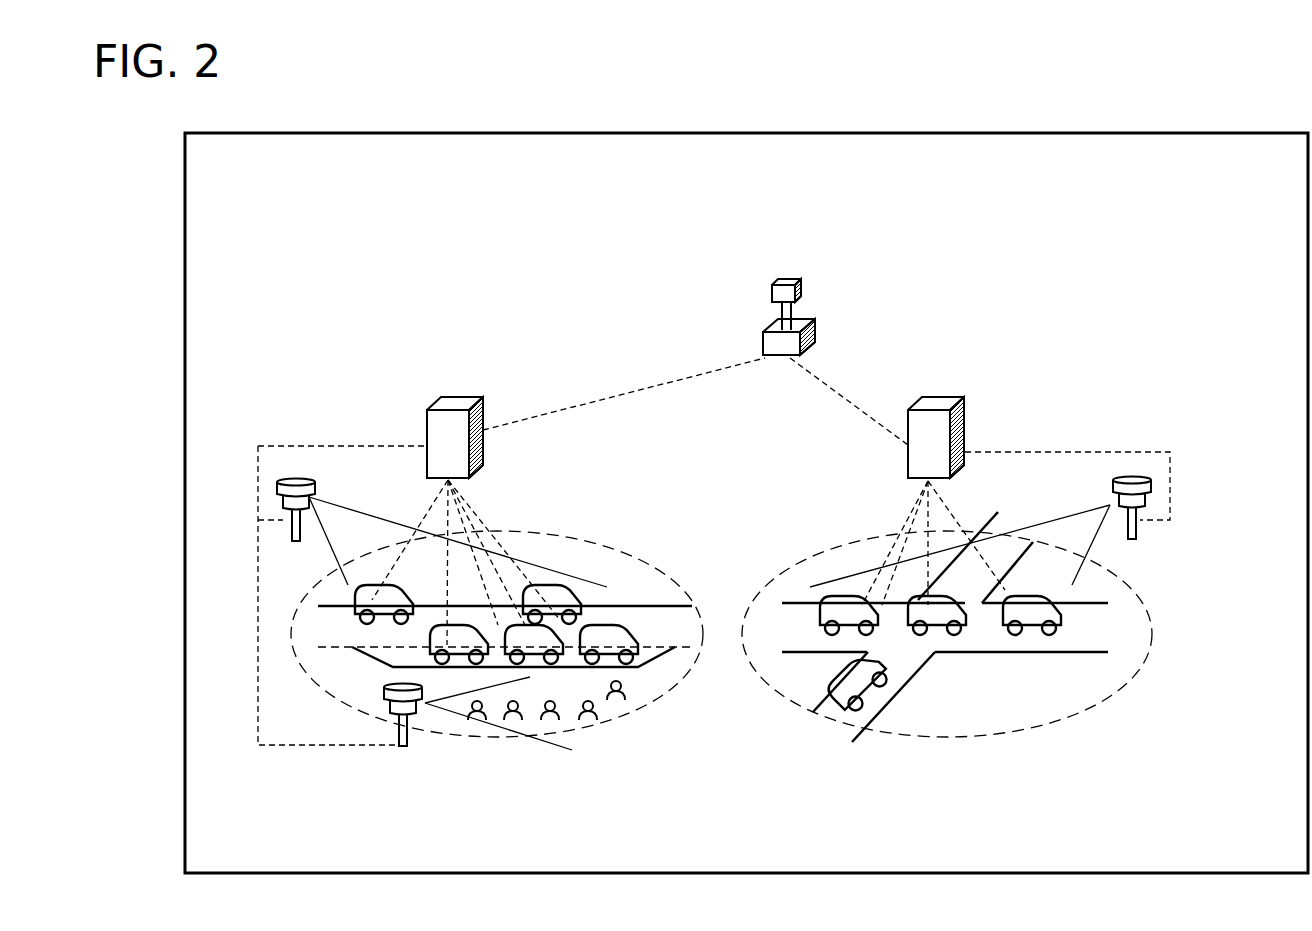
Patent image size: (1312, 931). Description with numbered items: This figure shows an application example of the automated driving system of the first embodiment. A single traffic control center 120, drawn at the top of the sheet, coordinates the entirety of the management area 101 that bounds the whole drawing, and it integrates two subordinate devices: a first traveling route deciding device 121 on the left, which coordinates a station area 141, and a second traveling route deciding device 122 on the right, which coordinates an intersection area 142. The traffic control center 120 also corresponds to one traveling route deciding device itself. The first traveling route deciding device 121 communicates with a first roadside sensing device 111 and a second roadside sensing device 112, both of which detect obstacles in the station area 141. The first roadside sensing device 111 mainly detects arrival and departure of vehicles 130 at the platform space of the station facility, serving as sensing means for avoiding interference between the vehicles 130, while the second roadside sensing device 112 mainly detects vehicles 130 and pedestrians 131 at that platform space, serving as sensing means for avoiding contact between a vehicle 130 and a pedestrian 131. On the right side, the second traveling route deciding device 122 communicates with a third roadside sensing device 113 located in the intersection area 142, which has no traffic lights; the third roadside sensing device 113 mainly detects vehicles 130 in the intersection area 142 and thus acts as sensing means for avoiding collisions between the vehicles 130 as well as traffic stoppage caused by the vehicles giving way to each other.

The management area 101 is at (1025, 135).
The first roadside sensing device 111 is at (296, 478).
The second roadside sensing device 112 is at (385, 700).
The third roadside sensing device 113 is at (1137, 480).
The traffic control center 120 is at (815, 320).
The first traveling route deciding device 121 is at (470, 398).
The second traveling route deciding device 122 is at (962, 400).
The vehicle 130 is at (815, 605).
The pedestrian 131 is at (600, 713).
The station area 141 is at (572, 537).
The intersection area 142 is at (1115, 690).